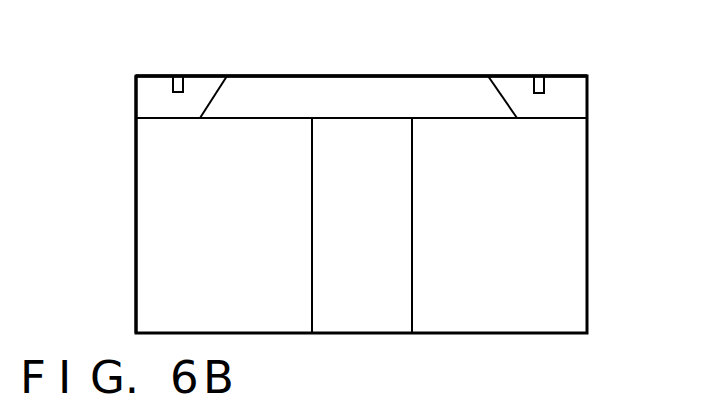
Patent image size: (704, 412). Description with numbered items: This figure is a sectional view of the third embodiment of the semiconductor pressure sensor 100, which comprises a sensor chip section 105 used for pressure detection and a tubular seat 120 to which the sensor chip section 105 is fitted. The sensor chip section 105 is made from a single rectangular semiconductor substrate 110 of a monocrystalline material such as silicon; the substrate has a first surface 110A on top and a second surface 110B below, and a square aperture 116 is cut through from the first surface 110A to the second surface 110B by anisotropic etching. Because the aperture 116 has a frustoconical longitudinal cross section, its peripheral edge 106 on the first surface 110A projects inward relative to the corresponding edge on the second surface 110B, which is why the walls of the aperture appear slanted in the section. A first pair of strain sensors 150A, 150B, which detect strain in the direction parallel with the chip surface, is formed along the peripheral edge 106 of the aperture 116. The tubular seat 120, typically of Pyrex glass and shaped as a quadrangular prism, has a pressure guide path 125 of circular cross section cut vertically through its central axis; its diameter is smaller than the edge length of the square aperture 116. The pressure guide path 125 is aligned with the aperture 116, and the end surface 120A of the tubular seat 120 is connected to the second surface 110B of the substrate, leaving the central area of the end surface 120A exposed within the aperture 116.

The semiconductor pressure sensor 100 is at (656, 257).
The sensor chip section 105 is at (133, 97).
The peripheral edge 106 is at (220, 82).
The semiconductor substrate 110 is at (577, 105).
The first surface 110A is at (575, 76).
The second surface 110B is at (562, 118).
The aperture 116 is at (348, 86).
The tubular seat 120 is at (148, 238).
The end surface 120A is at (422, 118).
The pressure guide path 125 is at (392, 325).
The strain sensor 150A is at (182, 75).
The strain sensor 150B is at (540, 76).